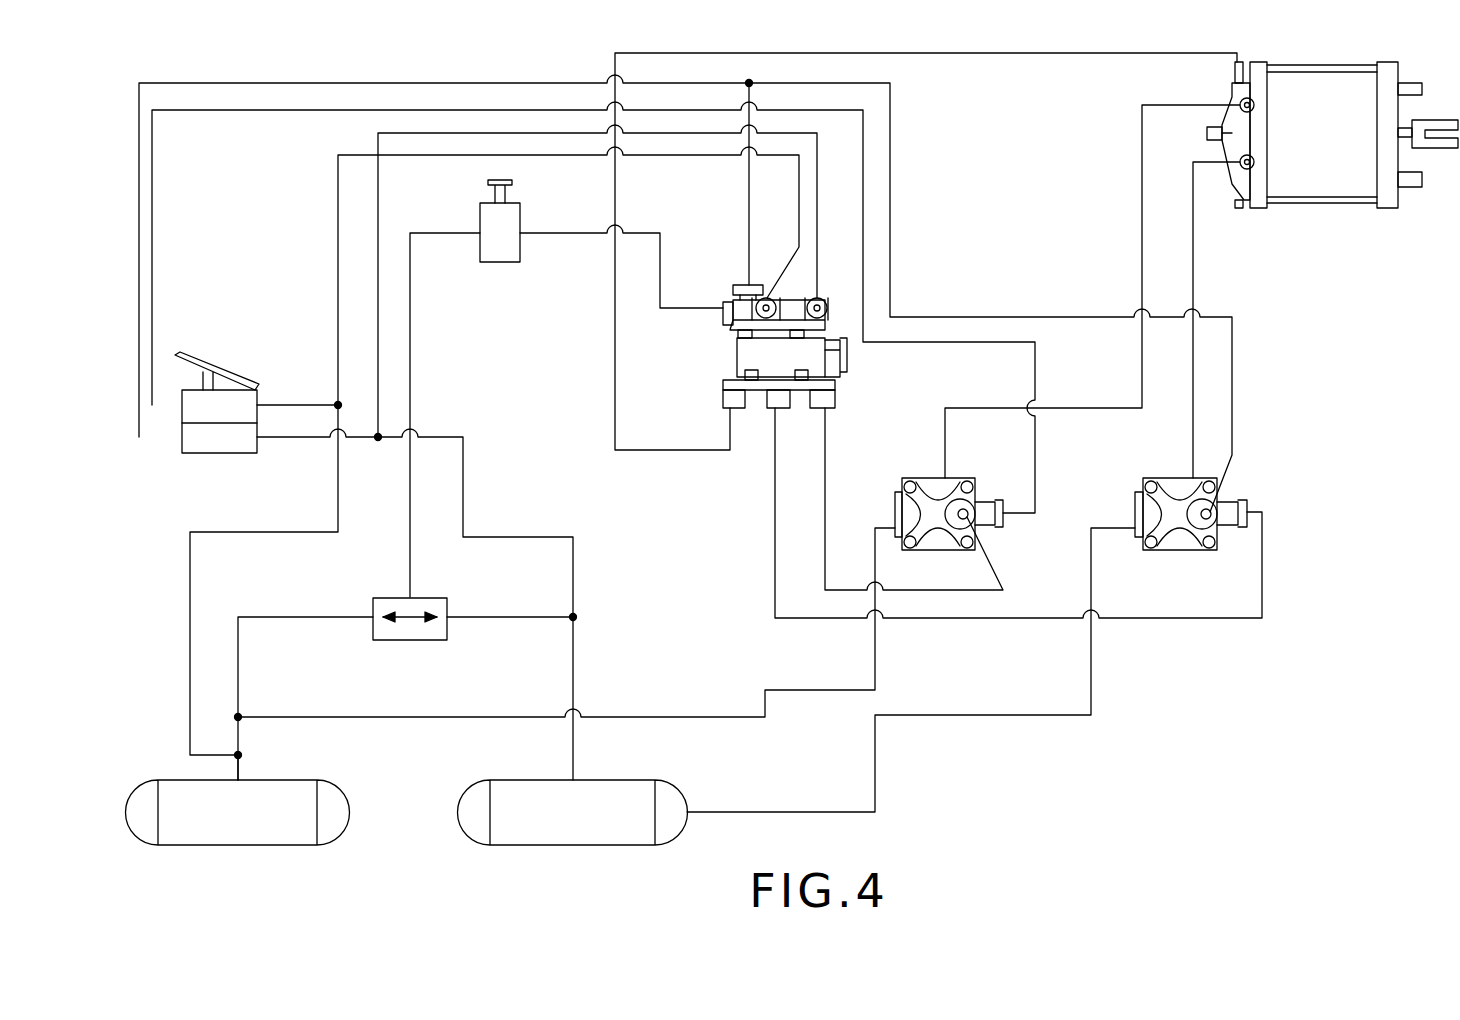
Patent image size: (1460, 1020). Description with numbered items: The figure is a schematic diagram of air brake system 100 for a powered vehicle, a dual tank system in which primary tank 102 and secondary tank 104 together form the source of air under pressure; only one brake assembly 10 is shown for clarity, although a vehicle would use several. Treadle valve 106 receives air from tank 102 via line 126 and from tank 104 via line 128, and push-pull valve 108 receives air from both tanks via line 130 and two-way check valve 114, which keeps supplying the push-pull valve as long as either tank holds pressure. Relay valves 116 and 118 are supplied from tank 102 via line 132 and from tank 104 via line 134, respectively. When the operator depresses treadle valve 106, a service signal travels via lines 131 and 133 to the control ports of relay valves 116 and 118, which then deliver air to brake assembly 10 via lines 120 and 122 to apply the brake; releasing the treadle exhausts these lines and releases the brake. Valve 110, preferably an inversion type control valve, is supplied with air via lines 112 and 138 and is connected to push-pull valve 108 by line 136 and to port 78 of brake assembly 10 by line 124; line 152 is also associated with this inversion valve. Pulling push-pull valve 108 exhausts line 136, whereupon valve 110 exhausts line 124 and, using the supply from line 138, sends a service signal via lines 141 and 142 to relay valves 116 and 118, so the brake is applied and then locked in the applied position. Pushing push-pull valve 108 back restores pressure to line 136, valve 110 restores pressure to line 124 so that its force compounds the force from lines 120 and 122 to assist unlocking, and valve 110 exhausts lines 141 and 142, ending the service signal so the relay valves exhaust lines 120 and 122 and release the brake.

The brake assembly 10 is at (1298, 146).
The port 78 is at (1232, 88).
The air brake system 100 is at (396, 72).
The primary tank 102 is at (248, 848).
The secondary tank 104 is at (526, 850).
The treadle valve 106 is at (220, 370).
The push-pull valve 108 is at (494, 264).
The valve 110 is at (732, 355).
The line 112 is at (338, 200).
The two-way check valve 114 is at (392, 642).
The relay valve 116 is at (895, 482).
The relay valve 118 is at (1133, 500).
The line 120 is at (1194, 252).
The line 122 is at (1142, 259).
The line 124 is at (852, 51).
The line 126 is at (301, 402).
The line 128 is at (310, 441).
The line 130 is at (414, 374).
The line 131 is at (202, 82).
The line 132 is at (628, 715).
The line 133 is at (171, 112).
The line 134 is at (875, 758).
The line 136 is at (662, 242).
The line 138 is at (378, 210).
The line 141 is at (825, 510).
The line 142 is at (775, 526).
The line 152 is at (748, 268).